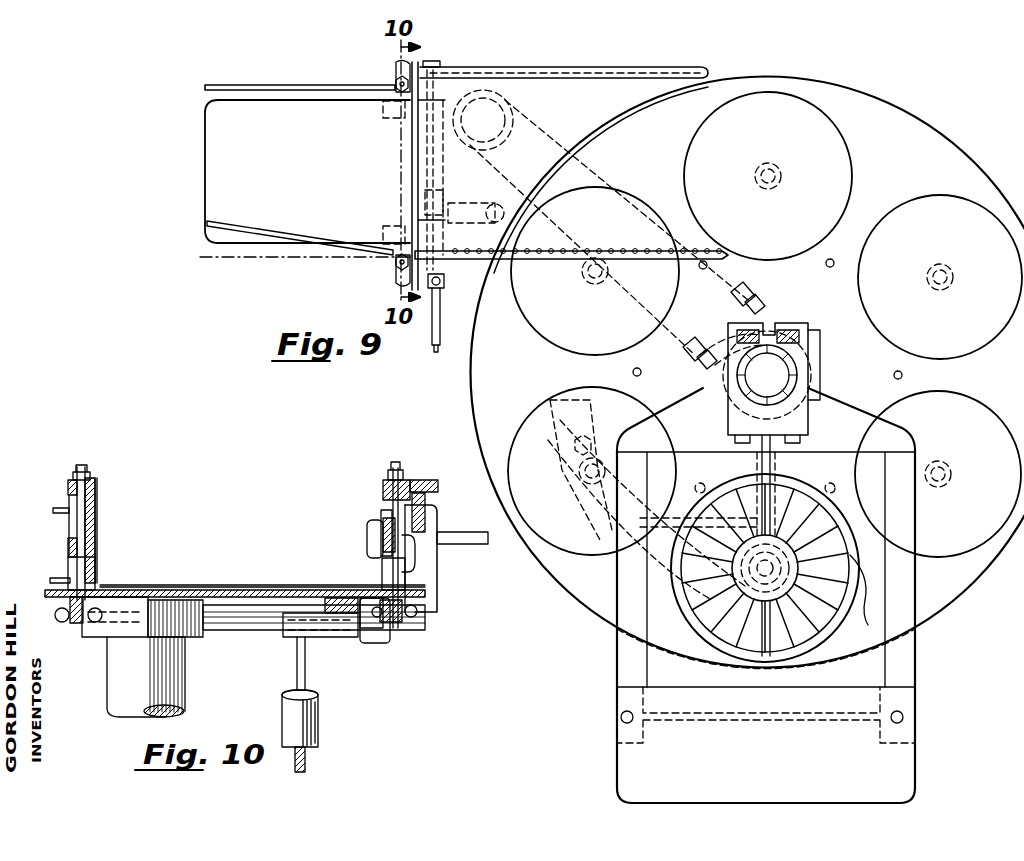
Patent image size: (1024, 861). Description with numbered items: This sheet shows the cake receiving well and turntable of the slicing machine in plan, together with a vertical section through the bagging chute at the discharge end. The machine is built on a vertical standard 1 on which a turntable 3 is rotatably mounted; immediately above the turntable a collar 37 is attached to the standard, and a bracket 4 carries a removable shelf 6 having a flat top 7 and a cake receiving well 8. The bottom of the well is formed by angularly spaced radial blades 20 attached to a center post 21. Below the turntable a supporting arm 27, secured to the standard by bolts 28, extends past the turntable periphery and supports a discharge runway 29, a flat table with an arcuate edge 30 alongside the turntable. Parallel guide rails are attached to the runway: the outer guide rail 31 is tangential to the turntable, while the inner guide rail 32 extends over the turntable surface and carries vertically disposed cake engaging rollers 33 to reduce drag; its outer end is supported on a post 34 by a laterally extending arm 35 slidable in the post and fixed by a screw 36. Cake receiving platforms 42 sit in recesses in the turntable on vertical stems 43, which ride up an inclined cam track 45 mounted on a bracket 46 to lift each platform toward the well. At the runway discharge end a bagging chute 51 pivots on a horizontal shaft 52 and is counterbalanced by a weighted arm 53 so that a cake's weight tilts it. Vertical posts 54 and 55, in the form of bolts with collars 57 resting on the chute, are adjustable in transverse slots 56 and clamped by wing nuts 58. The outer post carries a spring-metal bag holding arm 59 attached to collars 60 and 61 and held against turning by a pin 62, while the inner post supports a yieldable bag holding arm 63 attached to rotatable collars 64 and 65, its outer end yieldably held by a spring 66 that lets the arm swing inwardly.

In FIG. 9, the vertical standard 1 is at (805, 393).
In FIG. 9, the turntable 3 is at (960, 588).
In FIG. 9, the bracket 4 is at (1003, 430).
In FIG. 9, the shelf 6 is at (625, 663).
In FIG. 9, the flat top 7 is at (810, 777).
In FIG. 9, the cake receiving well 8 is at (842, 646).
In FIG. 9, the radially disposed blades 20 is at (855, 620).
In FIG. 9, the center post 21 is at (780, 662).
In FIG. 9, the supporting arm 27 is at (547, 142).
In FIG. 10, the supporting arm 27 is at (185, 685).
In FIG. 9, the bolts 28 is at (748, 290).
In FIG. 9, the discharge runway 29 is at (588, 85).
In FIG. 9, the arcuate edge 30 is at (622, 110).
In FIG. 9, the outer guide rail 31 is at (653, 77).
In FIG. 9, the inner guide rail 32 is at (710, 252).
In FIG. 10, the inner guide rail 32 is at (383, 518).
In FIG. 9, the cake engaging rollers 33 is at (620, 252).
In FIG. 10, the cake engaging rollers 33 is at (365, 527).
In FIG. 10, the post 34 is at (433, 578).
In FIG. 9, the laterally extending arm 35 is at (437, 352).
In FIG. 10, the laterally extending arm 35 is at (467, 532).
In FIG. 9, the screw 36 is at (433, 307).
In FIG. 10, the screw 36 is at (425, 497).
In FIG. 9, the collar 37 is at (797, 326).
In FIG. 9, the platforms 42 is at (547, 330).
In FIG. 9, the vertical stems 43 is at (948, 266).
In FIG. 9, the inclined cam track 45 is at (557, 437).
In FIG. 9, the bracket 46 is at (743, 460).
In FIG. 9, the bagging chute 51 is at (215, 118).
In FIG. 10, the bagging chute 51 is at (203, 592).
In FIG. 9, the horizontal shaft 52 is at (413, 130).
In FIG. 10, the horizontal shaft 52 is at (252, 637).
In FIG. 9, the weighted arm 53 is at (470, 203).
In FIG. 10, the weighted arm 53 is at (307, 682).
In FIG. 9, the outer post 54 is at (418, 62).
In FIG. 10, the outer post 54 is at (95, 507).
In FIG. 9, the inner post 55 is at (397, 247).
In FIG. 10, the inner post 55 is at (383, 480).
In FIG. 9, the transverse slots 56 is at (395, 71).
In FIG. 10, the transverse slots 56 is at (107, 587).
In FIG. 10, the collars 57 is at (93, 567).
In FIG. 10, the wing nuts 58 is at (63, 620).
In FIG. 9, the bag holding arm 59 is at (230, 85).
In FIG. 10, the bag holding arm 59 is at (97, 517).
In FIG. 10, the collar 60 is at (70, 487).
In FIG. 10, the collar 61 is at (67, 548).
In FIG. 10, the pin 62 is at (67, 488).
In FIG. 9, the inner yieldable bag holding arm 63 is at (238, 276).
In FIG. 10, the inner yieldable bag holding arm 63 is at (387, 485).
In FIG. 10, the collar 64 is at (410, 482).
In FIG. 10, the collar 65 is at (418, 552).
In FIG. 10, the spring 66 is at (368, 520).